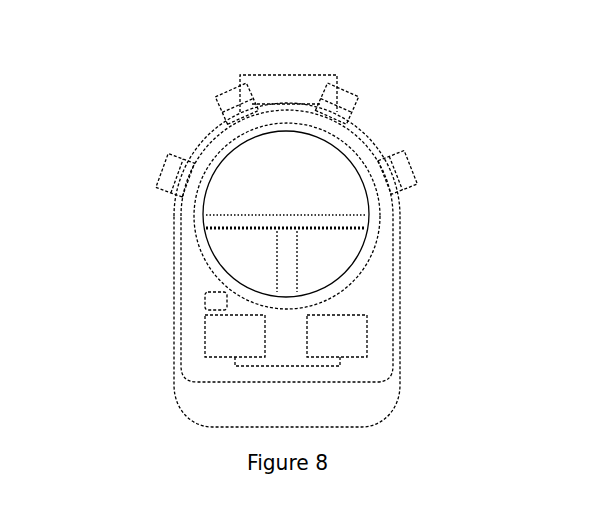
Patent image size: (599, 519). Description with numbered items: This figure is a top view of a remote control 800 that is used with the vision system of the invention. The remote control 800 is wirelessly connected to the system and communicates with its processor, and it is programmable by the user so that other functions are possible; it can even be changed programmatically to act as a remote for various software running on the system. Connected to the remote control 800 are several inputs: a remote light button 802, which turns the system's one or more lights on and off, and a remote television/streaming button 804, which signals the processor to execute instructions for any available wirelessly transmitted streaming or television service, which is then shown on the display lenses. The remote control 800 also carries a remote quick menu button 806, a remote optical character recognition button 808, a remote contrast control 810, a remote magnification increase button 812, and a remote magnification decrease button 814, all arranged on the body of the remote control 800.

The remote control 800 is at (278, 46).
The remote light button 802 is at (167, 168).
The remote television/streaming button 804 is at (218, 102).
The remote quick menu button 806 is at (352, 105).
The remote optical character recognition button 808 is at (410, 175).
The remote contrast control 810 is at (355, 198).
The remote magnification increase button 812 is at (367, 347).
The remote magnification decrease button 814 is at (205, 333).